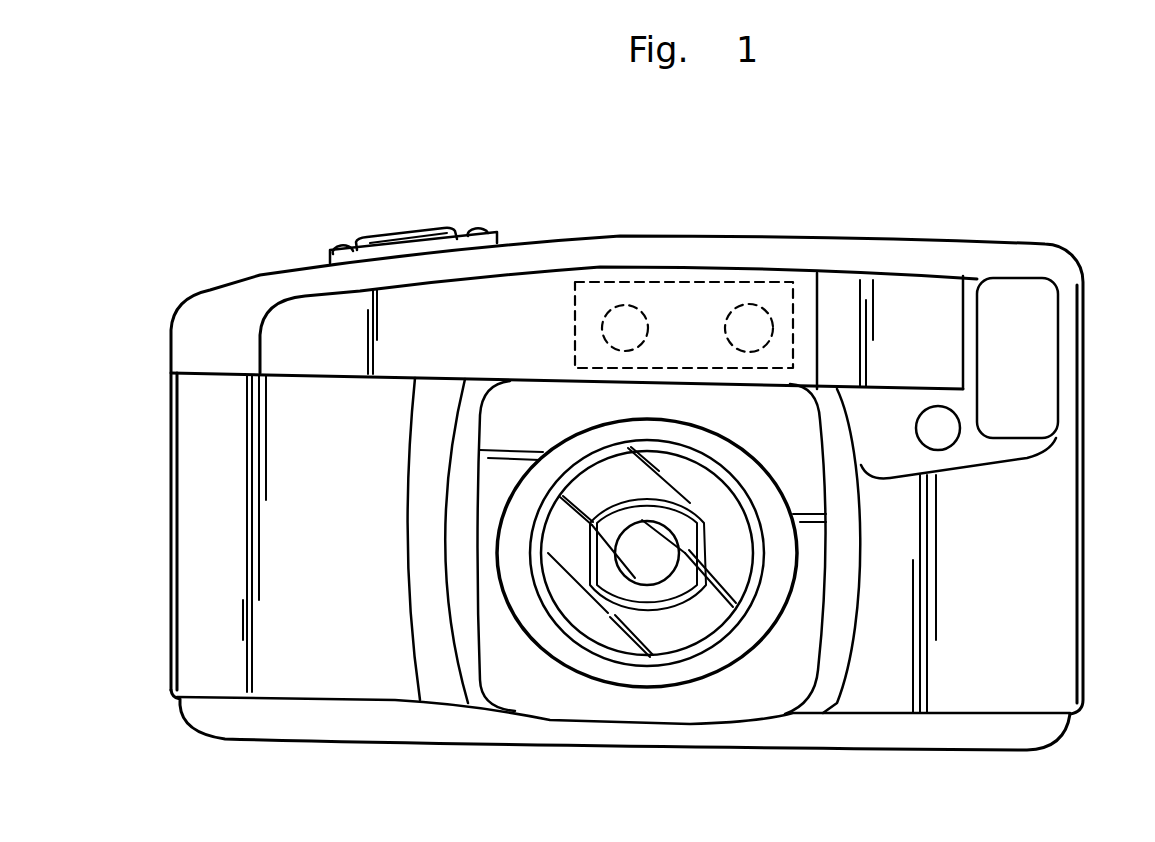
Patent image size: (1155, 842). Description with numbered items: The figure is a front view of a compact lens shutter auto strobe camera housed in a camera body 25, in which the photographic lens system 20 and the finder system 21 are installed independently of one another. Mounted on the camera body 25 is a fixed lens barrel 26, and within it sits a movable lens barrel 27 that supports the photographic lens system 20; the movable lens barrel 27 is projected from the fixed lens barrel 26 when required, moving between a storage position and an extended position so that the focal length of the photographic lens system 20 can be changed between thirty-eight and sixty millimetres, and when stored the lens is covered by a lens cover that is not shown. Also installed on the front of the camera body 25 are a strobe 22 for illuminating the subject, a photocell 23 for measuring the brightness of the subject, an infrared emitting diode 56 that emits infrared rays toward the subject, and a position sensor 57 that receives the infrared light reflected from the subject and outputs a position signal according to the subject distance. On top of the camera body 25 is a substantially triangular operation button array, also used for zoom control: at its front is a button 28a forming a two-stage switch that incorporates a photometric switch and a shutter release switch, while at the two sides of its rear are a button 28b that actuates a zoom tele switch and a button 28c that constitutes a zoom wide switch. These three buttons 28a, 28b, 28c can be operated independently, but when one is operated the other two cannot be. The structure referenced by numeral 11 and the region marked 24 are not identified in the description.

The lens barrel ring 11 is at (670, 590).
The photographic lens system 20 is at (630, 580).
The finder system 21 is at (893, 288).
The strobe 22 is at (1040, 355).
The photocell 23 is at (945, 447).
The distance measuring module 24 is at (683, 295).
The camera body 25 is at (947, 698).
The fixed lens barrel 26 is at (772, 695).
The movable lens barrel 27 is at (693, 627).
The button 28a is at (411, 228).
The button 28b is at (343, 245).
The button 28c is at (480, 228).
The infrared emitting diode (IRED) 56 is at (748, 303).
The position sensor (PSD) 57 is at (630, 307).